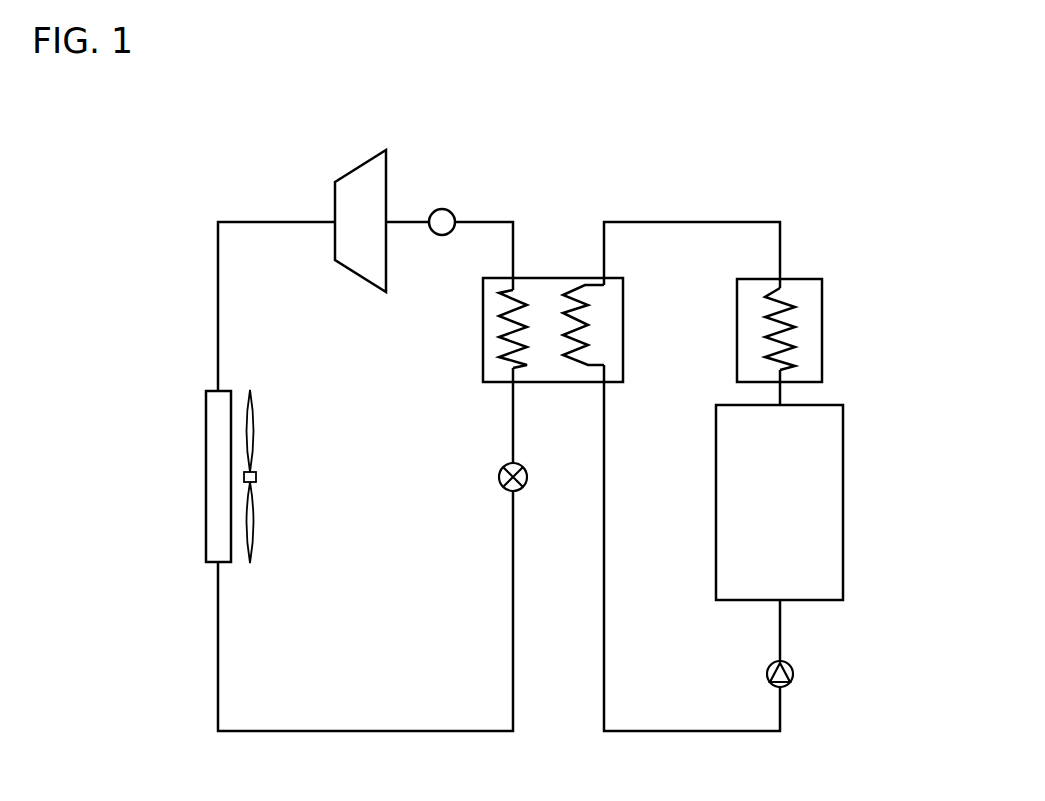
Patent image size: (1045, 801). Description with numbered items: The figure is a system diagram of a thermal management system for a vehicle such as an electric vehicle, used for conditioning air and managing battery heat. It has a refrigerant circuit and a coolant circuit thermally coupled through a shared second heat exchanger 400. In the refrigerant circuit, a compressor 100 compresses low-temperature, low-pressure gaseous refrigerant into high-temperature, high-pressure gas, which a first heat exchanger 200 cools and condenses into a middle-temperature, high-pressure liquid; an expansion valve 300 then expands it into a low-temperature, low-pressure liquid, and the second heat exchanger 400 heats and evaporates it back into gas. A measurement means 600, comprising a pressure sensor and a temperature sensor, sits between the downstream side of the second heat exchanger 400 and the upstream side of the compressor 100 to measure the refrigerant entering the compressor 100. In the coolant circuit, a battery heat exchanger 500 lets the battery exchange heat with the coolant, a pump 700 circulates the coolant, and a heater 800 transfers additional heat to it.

The compressor 100 is at (360, 163).
The first heat exchanger 200 is at (206, 477).
The expansion valve 300 is at (499, 476).
The second heat exchanger 400 is at (551, 277).
The battery heat exchanger 500 is at (843, 503).
The measurement means 600 is at (442, 208).
The pump 700 is at (793, 674).
The heater 800 is at (822, 331).